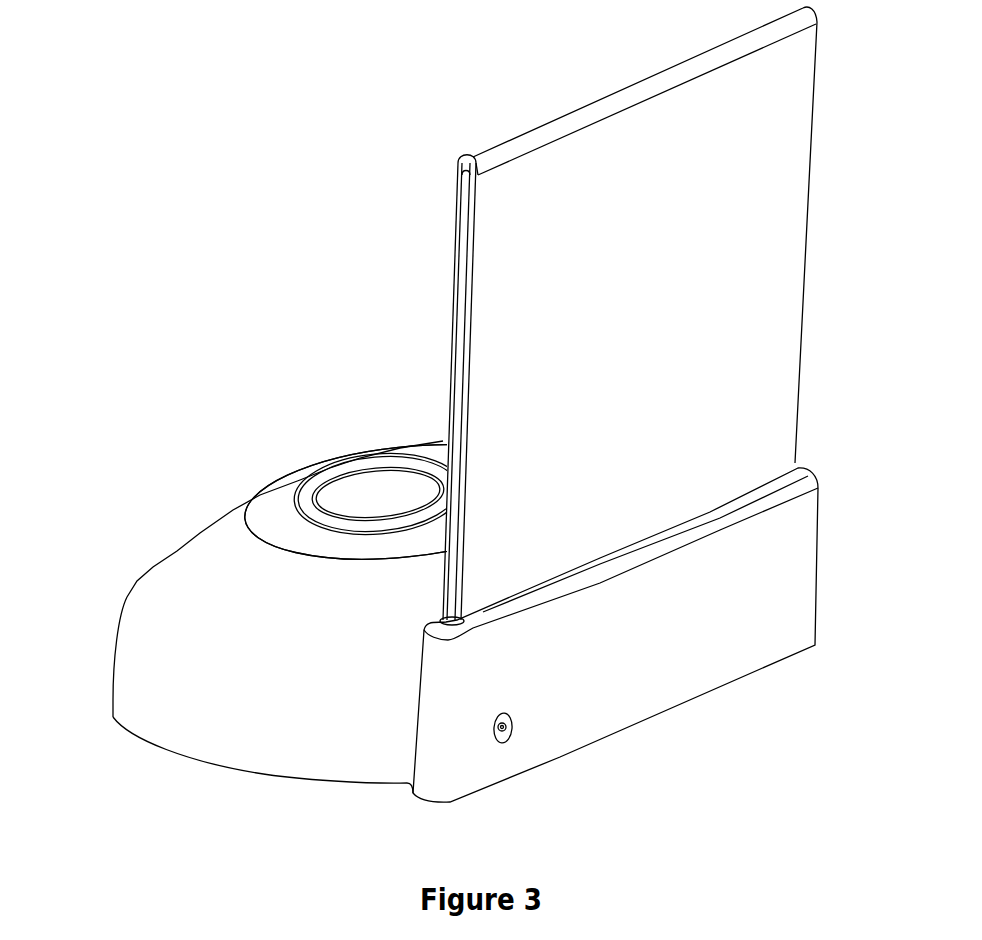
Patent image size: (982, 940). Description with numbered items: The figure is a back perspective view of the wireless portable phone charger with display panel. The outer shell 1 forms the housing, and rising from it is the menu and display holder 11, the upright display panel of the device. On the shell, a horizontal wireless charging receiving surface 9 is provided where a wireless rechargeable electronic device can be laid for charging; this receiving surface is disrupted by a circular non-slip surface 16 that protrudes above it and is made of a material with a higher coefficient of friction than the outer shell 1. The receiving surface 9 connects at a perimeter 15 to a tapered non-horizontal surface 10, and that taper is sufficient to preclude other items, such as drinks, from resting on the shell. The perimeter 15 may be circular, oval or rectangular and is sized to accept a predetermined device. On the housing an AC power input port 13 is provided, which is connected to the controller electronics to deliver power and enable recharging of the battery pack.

The outer shell 1 is at (663, 638).
The horizontal wireless charging receiving surface 9 is at (277, 525).
The non-horizontal surface 10 is at (195, 560).
The menu and display holder 11 is at (742, 236).
The power input port 13 is at (522, 729).
The perimeter 15 is at (292, 545).
The non-slip surface 16 is at (338, 470).